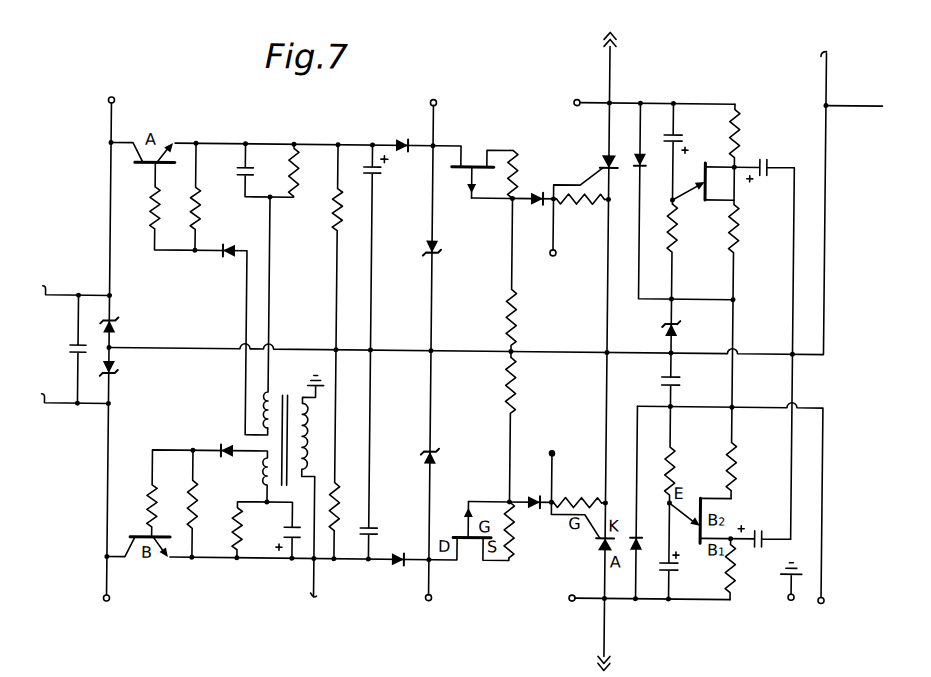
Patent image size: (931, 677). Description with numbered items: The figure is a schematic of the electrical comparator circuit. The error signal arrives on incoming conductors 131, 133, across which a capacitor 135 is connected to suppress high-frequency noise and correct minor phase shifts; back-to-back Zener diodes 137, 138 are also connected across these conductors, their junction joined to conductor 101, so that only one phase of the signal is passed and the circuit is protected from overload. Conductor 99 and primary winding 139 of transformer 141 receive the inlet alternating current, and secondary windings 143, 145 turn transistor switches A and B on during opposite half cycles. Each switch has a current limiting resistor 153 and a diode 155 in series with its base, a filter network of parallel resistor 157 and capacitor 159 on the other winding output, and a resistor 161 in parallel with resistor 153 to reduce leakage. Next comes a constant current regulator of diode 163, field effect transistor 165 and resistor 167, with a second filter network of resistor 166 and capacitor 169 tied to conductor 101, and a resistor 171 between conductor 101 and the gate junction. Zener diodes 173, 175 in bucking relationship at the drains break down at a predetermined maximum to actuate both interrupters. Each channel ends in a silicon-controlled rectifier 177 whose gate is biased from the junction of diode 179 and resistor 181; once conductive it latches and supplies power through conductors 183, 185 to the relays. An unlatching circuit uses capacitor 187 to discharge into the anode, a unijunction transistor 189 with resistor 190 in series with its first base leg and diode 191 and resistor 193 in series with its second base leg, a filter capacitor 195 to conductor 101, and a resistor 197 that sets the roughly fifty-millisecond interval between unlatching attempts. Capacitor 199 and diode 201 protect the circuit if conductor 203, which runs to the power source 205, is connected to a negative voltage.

The conductor 99 is at (311, 596).
The conductor 101 is at (429, 356).
The incoming conductor 131 is at (56, 294).
The incoming conductor 133 is at (57, 408).
The capacitor 135 is at (75, 351).
The Zener diode 137 is at (120, 323).
The Zener diode 138 is at (118, 370).
The primary winding 139 is at (317, 450).
The transformer 141 is at (247, 426).
The secondary winding 143 is at (262, 395).
The secondary winding 145 is at (258, 489).
The current limiting resistor 153 is at (152, 237).
The diode 155 is at (241, 255).
The resistor 157 is at (286, 167).
The capacitor 159 is at (244, 164).
The resistor 161 is at (195, 217).
The diode 163 is at (401, 140).
The field effect transistor 165 is at (470, 162).
The resistor 166 is at (334, 195).
The resistor 167 is at (513, 153).
The capacitor 169 is at (373, 178).
The resistor 171 is at (506, 310).
The Zener diode 173 is at (427, 254).
The Zener diode 175 is at (435, 450).
The silicon-controlled rectifier 177 is at (602, 163).
The diode 179 is at (536, 186).
The resistor 181 is at (586, 204).
The conductor 183 is at (605, 73).
The conductor 185 is at (605, 621).
The capacitor 187 is at (678, 133).
The unijunction transistor 189 is at (752, 203).
The resistor 190 is at (738, 138).
The diode 191 is at (640, 154).
The resistor 193 is at (732, 224).
The capacitor 195 is at (767, 164).
The resistor 197 is at (678, 248).
The capacitor 199 is at (662, 380).
The diode 201 is at (664, 330).
The conductor 203 is at (704, 406).
The source of power 205 is at (810, 608).